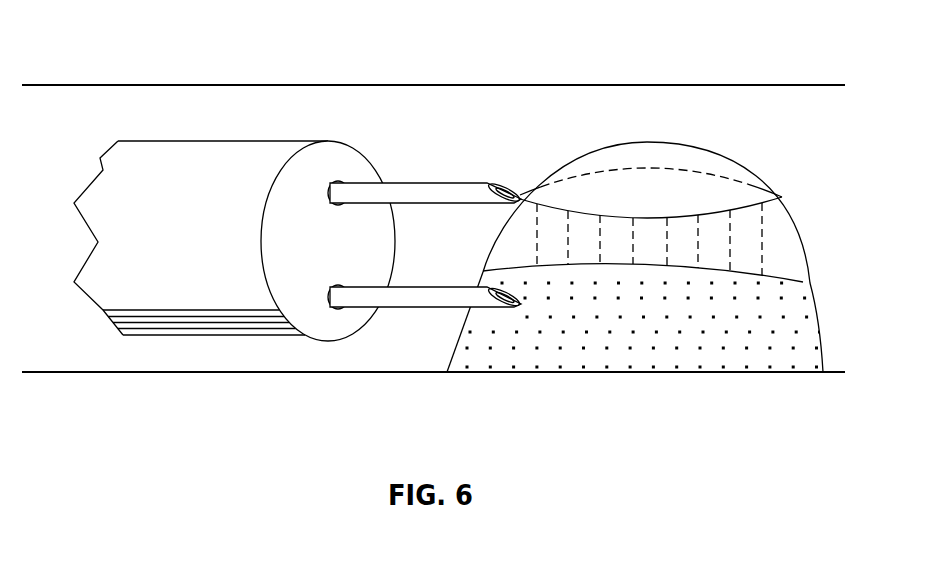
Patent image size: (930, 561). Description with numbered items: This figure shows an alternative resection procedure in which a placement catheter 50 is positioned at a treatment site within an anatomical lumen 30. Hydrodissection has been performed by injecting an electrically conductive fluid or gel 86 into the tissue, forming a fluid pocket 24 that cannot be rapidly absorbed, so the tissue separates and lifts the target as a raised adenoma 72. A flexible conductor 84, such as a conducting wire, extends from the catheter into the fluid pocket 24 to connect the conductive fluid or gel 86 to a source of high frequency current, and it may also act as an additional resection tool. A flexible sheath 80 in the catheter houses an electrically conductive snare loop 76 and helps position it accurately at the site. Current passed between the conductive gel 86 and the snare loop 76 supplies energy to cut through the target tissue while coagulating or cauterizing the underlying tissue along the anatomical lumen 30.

The anatomical lumen 30 is at (607, 84).
The placement catheter 50 is at (206, 141).
The flexible sheath 80 is at (437, 182).
The flexible conductor 84 is at (418, 308).
The raised adenoma 72 is at (725, 153).
The snare loop 76 is at (780, 187).
The electrically conductive fluid or gel 86 is at (593, 357).
The fluid pocket 24 is at (733, 337).